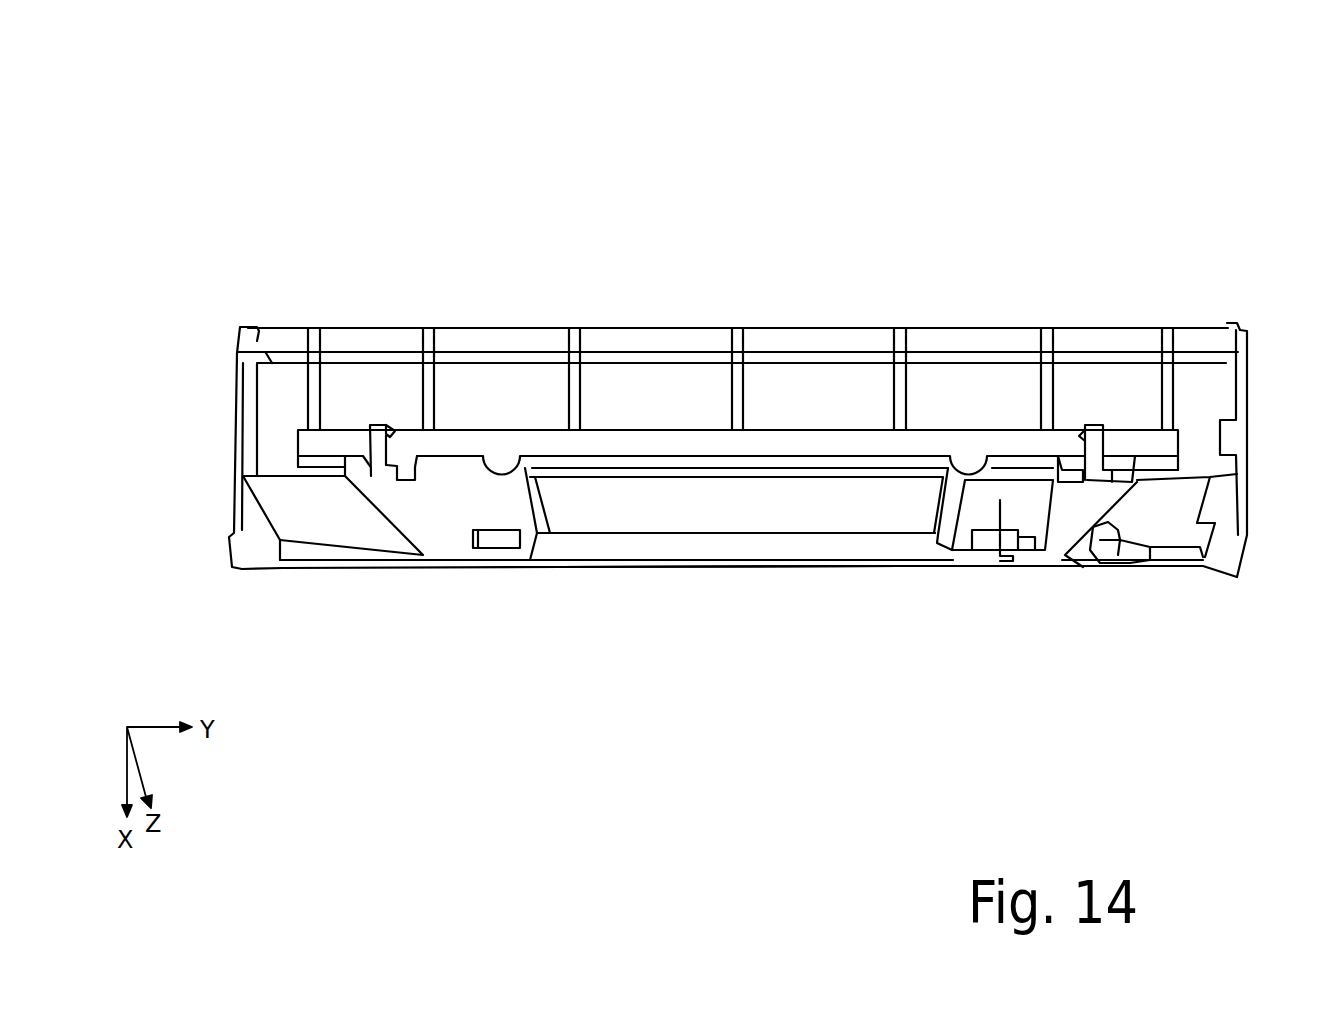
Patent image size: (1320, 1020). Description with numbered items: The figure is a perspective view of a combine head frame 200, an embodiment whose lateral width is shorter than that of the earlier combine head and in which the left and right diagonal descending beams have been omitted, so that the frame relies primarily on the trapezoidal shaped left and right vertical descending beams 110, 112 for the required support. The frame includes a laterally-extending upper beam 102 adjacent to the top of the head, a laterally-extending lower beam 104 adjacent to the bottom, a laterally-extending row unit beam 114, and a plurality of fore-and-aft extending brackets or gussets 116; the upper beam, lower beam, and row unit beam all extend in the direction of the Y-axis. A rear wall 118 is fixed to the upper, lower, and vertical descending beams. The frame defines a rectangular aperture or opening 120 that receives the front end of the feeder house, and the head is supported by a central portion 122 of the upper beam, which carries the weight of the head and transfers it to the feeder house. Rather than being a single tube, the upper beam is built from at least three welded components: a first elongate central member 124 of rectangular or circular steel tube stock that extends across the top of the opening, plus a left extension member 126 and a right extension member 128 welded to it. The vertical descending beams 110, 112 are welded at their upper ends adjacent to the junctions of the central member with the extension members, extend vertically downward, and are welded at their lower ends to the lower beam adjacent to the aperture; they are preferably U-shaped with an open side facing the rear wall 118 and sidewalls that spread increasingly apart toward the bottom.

The combine head frame 200 is at (1170, 143).
The laterally-extending row unit beam 114 is at (507, 342).
The fore-and-aft extending brackets or gussets 116 is at (422, 388).
The laterally-extending lower beam 104 is at (972, 447).
The right vertical descending beam 112 is at (412, 503).
The rectangular aperture or opening 120 is at (637, 505).
The laterally-extending upper beam 102 is at (682, 546).
The central portion 122 is at (768, 578).
The first elongate central member 124 is at (838, 565).
The right extension member 128 is at (313, 560).
The rear wall 118 is at (327, 507).
The left vertical descending beam 110 is at (1068, 513).
The left extension member 126 is at (1173, 552).